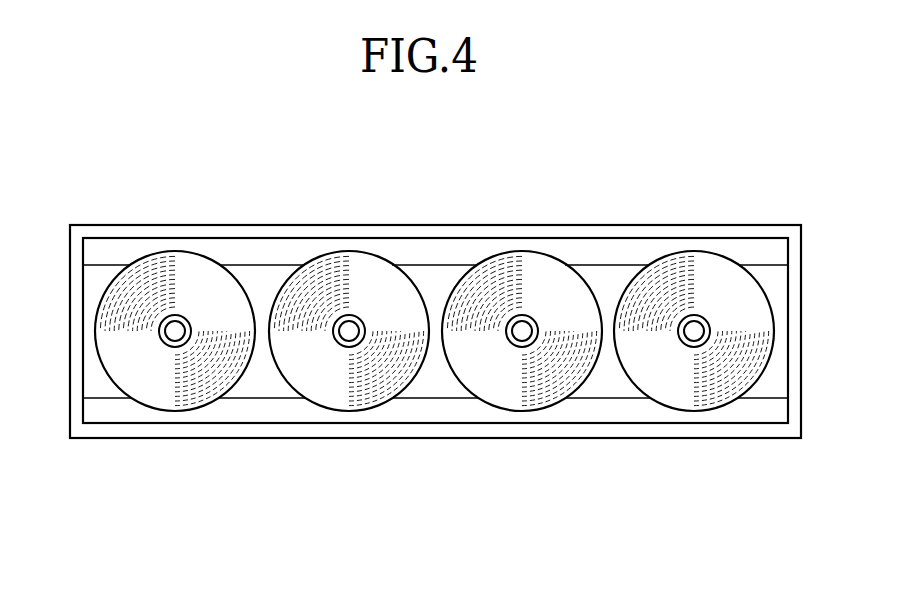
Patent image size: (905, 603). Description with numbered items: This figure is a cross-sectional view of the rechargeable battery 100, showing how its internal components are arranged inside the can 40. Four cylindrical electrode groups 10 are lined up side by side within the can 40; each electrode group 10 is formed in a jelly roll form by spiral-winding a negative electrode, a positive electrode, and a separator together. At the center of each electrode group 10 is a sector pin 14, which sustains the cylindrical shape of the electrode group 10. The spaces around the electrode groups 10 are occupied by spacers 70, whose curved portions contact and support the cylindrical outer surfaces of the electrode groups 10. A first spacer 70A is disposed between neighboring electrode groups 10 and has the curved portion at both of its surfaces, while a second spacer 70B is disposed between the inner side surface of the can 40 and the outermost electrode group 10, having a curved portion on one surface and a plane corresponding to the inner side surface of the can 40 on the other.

The rechargeable battery 100 is at (575, 202).
The electrode group 10 is at (675, 382).
The sector pin 14 is at (185, 317).
The can 40 is at (423, 430).
The spacer 70 is at (258, 542).
The first spacer 70A is at (263, 377).
The second spacer 70B is at (90, 372).